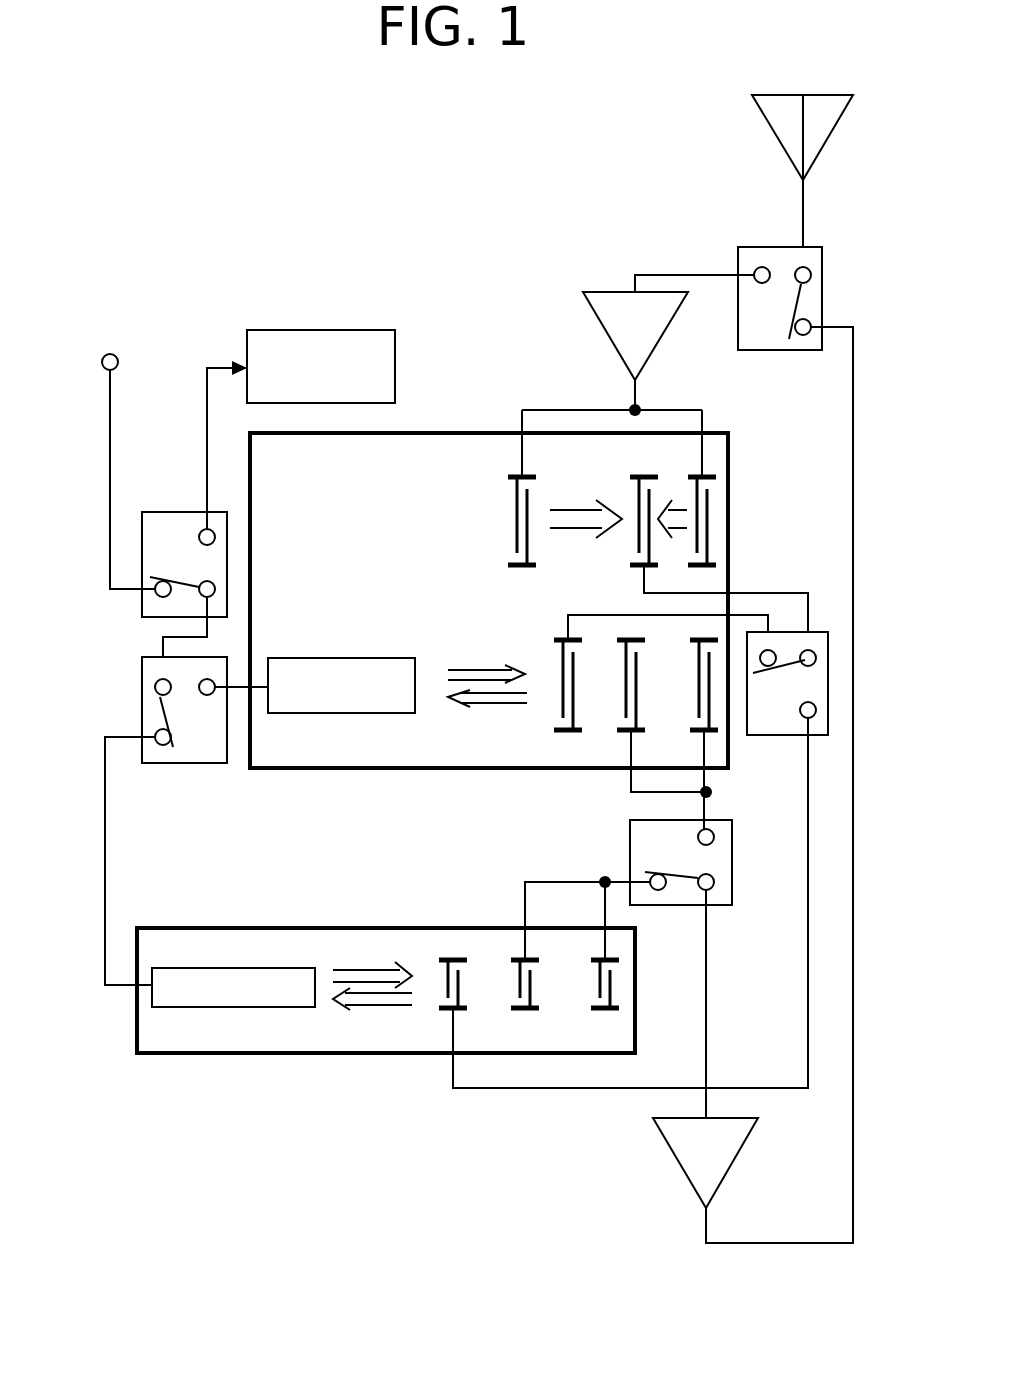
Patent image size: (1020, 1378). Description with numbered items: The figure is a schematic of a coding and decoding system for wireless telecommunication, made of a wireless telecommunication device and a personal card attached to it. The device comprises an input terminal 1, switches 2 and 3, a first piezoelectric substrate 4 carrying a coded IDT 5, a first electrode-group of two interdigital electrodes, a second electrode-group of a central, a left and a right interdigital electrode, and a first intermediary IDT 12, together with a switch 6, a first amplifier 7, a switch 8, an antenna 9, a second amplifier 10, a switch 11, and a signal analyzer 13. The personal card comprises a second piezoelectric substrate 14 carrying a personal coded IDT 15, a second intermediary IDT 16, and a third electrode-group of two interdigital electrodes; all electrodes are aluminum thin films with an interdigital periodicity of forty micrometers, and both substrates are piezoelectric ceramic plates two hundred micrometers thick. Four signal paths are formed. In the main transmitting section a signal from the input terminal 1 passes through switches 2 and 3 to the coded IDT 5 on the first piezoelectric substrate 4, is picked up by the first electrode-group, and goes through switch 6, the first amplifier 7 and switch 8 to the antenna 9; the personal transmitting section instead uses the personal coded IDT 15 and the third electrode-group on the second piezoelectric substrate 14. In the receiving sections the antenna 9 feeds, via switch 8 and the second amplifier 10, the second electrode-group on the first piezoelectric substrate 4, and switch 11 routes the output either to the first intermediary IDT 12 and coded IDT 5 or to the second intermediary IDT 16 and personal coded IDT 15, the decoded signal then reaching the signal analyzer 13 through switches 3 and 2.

The input terminal 1 is at (126, 333).
The switch 2 is at (184, 530).
The switch 3 is at (184, 748).
The first piezoelectric substrate 4 is at (489, 596).
The coded IDT 5 is at (360, 746).
The switch 6 is at (635, 855).
The first amplifier 7 is at (631, 1163).
The switch 8 is at (780, 349).
The antenna 9 is at (713, 171).
The second amplifier 10 is at (560, 351).
The switch 11 is at (787, 721).
The first intermediary IDT 12 is at (548, 705).
The signal analyzer 13 is at (321, 329).
The second piezoelectric substrate 14 is at (386, 1004).
The personal coded IDT 15 is at (261, 1061).
The second intermediary IDT 16 is at (434, 1004).